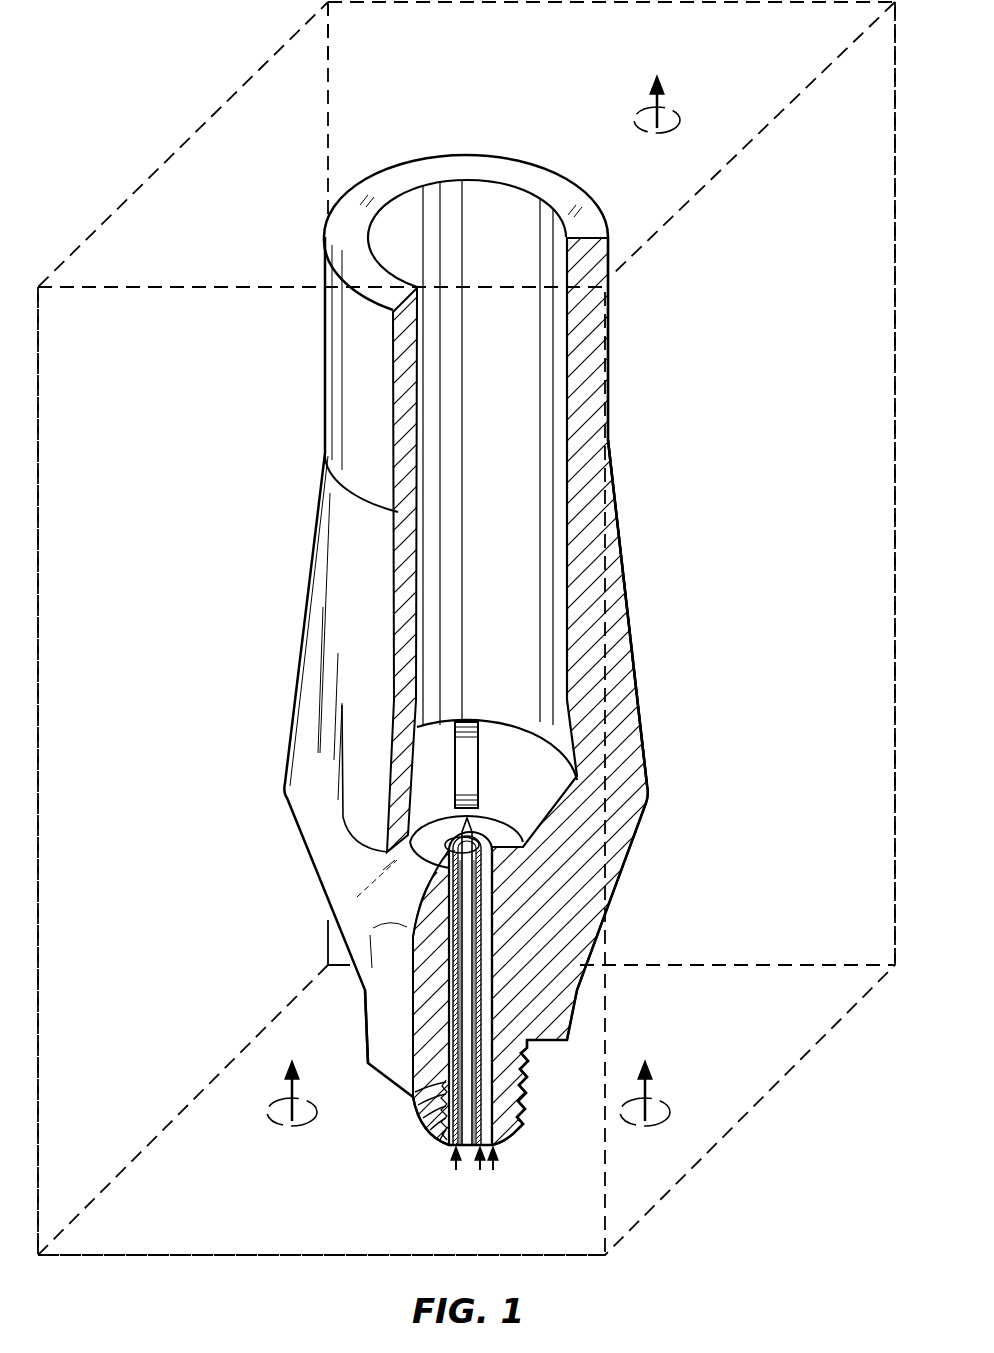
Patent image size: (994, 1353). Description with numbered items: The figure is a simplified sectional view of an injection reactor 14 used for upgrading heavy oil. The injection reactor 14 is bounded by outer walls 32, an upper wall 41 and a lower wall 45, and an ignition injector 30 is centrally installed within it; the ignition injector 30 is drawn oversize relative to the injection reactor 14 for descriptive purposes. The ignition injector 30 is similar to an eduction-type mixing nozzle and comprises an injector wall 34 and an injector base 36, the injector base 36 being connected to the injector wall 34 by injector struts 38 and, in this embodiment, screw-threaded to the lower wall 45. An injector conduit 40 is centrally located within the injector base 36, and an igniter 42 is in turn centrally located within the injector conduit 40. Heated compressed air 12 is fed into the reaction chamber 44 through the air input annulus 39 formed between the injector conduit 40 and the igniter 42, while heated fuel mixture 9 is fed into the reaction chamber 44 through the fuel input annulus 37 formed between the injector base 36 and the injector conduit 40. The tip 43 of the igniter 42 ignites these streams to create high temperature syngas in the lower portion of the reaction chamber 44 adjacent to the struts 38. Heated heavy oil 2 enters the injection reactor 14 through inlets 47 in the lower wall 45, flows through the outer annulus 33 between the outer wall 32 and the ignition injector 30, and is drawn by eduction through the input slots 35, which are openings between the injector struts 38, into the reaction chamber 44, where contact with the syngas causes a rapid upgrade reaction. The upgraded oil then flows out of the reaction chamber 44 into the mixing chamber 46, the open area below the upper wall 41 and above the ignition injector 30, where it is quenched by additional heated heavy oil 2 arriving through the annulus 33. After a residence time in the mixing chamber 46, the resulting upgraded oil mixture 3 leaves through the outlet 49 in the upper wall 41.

The injection reactor 14 is at (216, 84).
The upper wall 41 is at (268, 182).
The mixing chamber 46 is at (404, 52).
The outer wall 32 is at (171, 464).
The outer annulus 33 is at (510, 483).
The lower wall 45 is at (353, 1195).
The ignition injector 30 is at (430, 148).
The injector wall 34 is at (325, 330).
The reaction chamber 44 is at (508, 530).
The input slots 35 is at (427, 758).
The injector struts 38 is at (483, 763).
The injector base 36 is at (498, 816).
The tip 43 is at (467, 820).
The fuel input annulus 37 is at (490, 910).
The injector conduit 40 is at (484, 935).
The air input annulus 39 is at (478, 962).
The igniter 42 is at (475, 1032).
The upgraded oil mixture 3 is at (660, 110).
The outlet 49 is at (673, 134).
The heated heavy oil 2 is at (290, 1080).
The inlets 47 is at (268, 1112).
The heated fuel mixture 9 is at (456, 1168).
The heated compressed air 12 is at (480, 1170).